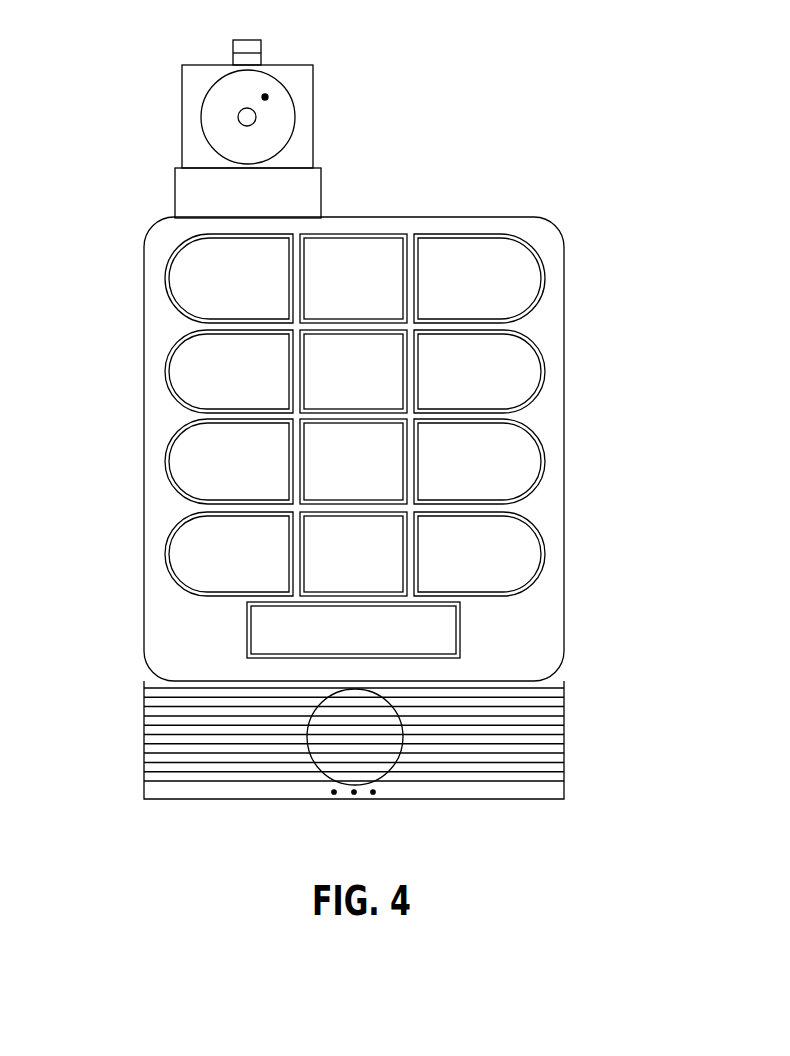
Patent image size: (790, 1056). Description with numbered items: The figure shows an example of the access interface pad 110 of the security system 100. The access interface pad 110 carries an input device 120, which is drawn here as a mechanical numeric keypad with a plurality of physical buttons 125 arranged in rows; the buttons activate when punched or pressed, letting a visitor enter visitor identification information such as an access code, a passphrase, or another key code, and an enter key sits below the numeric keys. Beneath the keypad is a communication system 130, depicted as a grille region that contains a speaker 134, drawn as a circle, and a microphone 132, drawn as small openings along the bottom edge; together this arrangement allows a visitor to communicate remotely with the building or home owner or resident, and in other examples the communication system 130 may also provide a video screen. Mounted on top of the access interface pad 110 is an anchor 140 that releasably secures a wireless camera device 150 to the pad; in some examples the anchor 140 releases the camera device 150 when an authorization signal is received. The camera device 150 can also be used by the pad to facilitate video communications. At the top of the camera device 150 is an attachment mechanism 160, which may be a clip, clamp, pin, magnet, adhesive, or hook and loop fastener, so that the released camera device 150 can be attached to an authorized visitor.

The security system 100 is at (365, 423).
The access interface pad 110 is at (564, 300).
The input device 120 is at (190, 278).
The physical buttons 125 is at (190, 370).
The communication system 130 is at (564, 727).
The microphone 132 is at (376, 795).
The speaker 134 is at (322, 765).
The anchor 140 is at (175, 195).
The camera device 150 is at (182, 113).
The attachment mechanism 160 is at (248, 40).